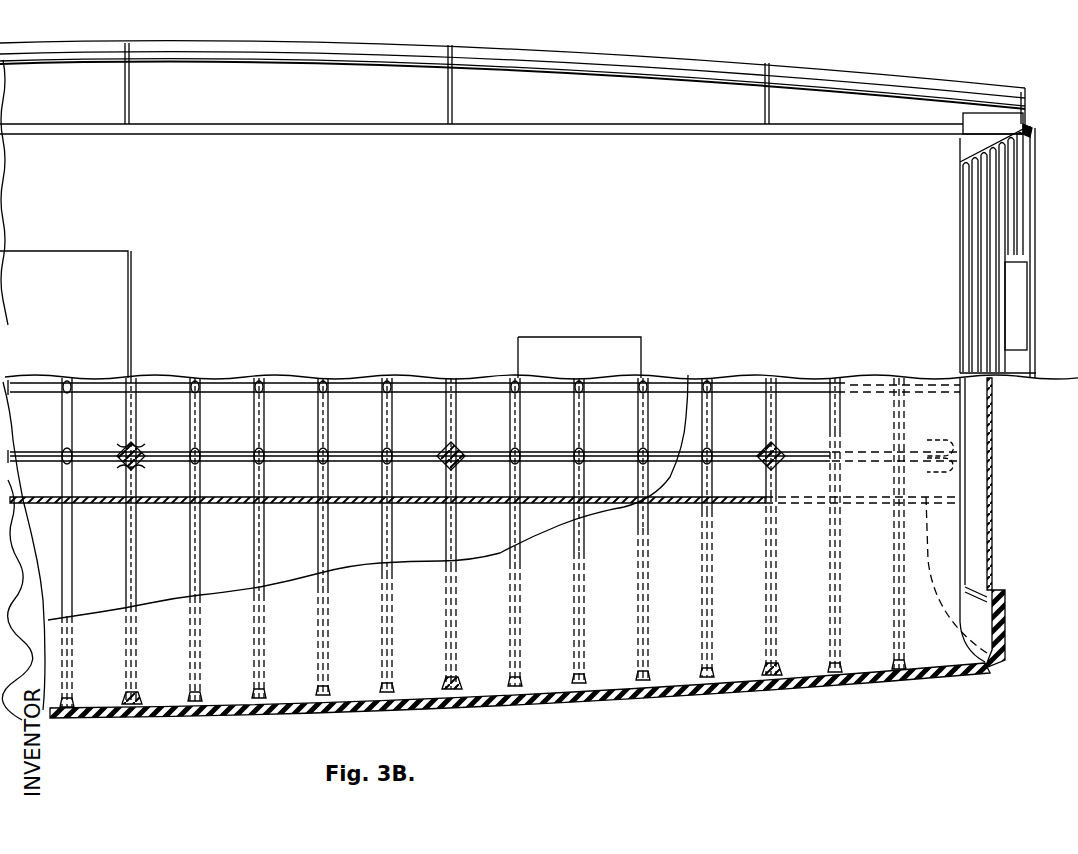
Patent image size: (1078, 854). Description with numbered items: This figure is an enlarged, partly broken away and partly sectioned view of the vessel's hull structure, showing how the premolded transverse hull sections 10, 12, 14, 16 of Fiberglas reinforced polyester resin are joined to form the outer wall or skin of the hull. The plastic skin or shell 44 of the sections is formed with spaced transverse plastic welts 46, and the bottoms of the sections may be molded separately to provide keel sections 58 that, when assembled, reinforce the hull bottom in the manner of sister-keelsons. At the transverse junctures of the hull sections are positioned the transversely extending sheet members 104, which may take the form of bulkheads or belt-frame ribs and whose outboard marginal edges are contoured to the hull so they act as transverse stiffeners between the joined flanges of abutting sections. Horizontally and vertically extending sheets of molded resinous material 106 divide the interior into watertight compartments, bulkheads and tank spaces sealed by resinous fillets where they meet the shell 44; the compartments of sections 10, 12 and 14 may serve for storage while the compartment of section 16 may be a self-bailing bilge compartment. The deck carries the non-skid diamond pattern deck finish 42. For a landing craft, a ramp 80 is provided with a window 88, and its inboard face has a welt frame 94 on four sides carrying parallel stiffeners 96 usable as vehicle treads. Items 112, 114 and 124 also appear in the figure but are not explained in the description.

The transverse hull section 10 is at (877, 56).
The transverse hull section 12 is at (594, 36).
The transverse hull section 14 is at (260, 70).
The transverse hull section 16 is at (94, 60).
The non-skid diamond pattern deck finish 42 is at (708, 277).
The plastic skin or shell 44 is at (702, 690).
The transverse plastic welt 46 is at (74, 419).
The keel section 58 is at (138, 466).
The ramp 80 is at (1020, 200).
The window 88 is at (1020, 300).
The welt frame 94 is at (1031, 127).
The parallel stiffener 96 is at (1018, 229).
The transversely extending sheet member 104 is at (139, 418).
The sheet of molded resinous material 106 is at (264, 549).
The lower wall panel 112 is at (692, 581).
The intermediate rail 114 is at (295, 491).
The end cap 124 is at (993, 118).